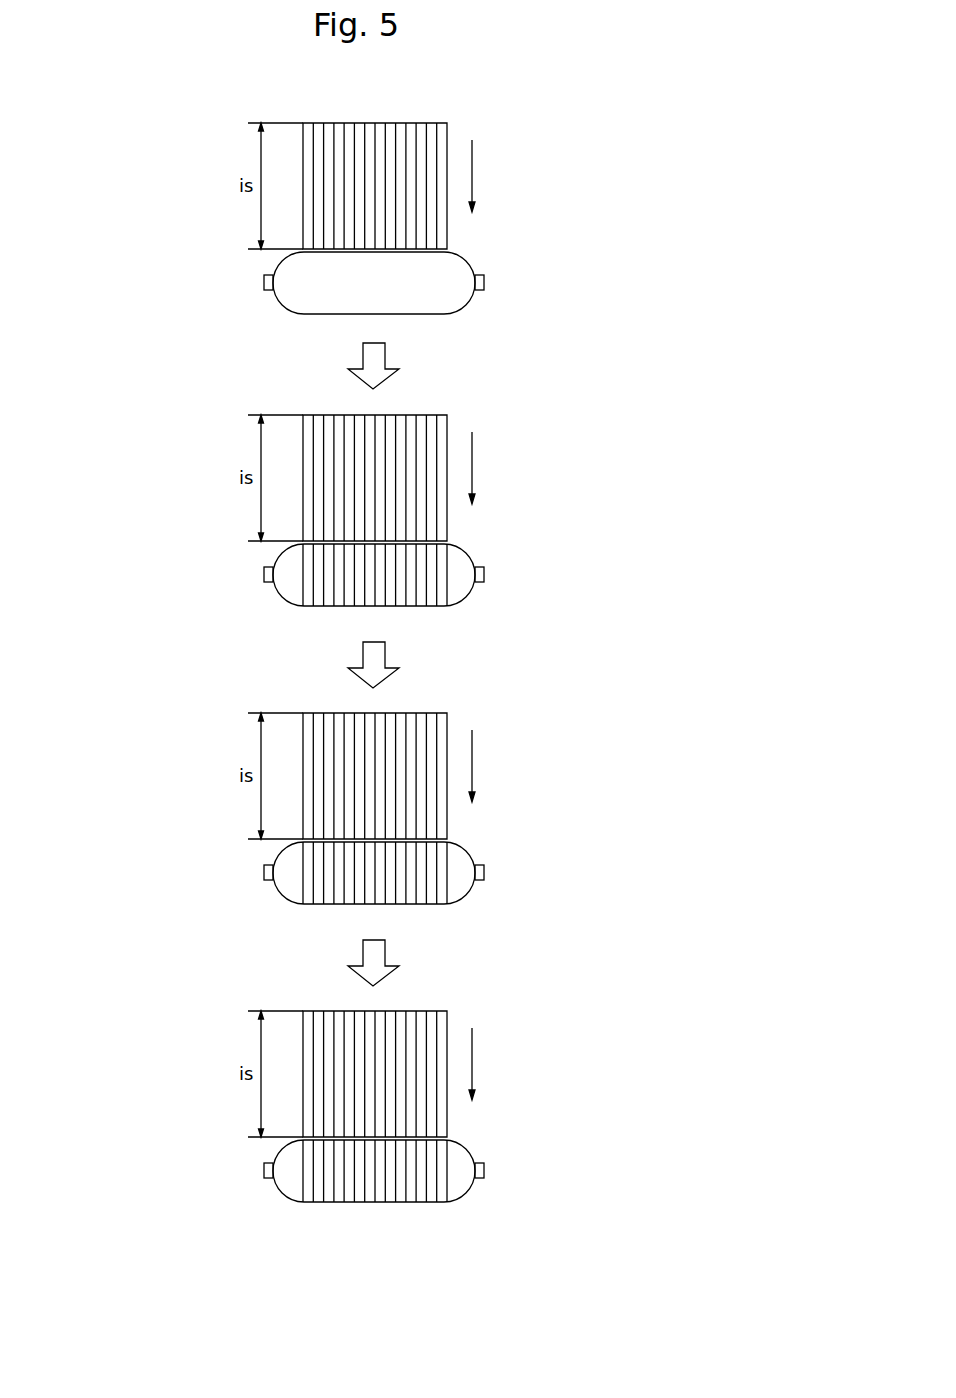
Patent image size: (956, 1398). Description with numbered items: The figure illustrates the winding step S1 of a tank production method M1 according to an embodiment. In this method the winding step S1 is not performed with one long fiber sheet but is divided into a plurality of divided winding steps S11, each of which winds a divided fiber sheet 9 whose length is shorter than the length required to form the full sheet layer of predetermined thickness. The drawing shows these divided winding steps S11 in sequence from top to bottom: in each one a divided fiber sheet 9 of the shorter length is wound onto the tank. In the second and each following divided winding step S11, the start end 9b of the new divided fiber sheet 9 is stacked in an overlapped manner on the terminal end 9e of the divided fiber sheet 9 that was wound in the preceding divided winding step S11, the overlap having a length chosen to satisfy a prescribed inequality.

The winding step S1 is at (144, 209).
The tank production method M1 is at (672, 164).
The divided winding step S11 is at (521, 178).
The divided fiber sheet 9 is at (318, 604).
The start end 9b is at (447, 528).
The terminal end 9e is at (453, 555).